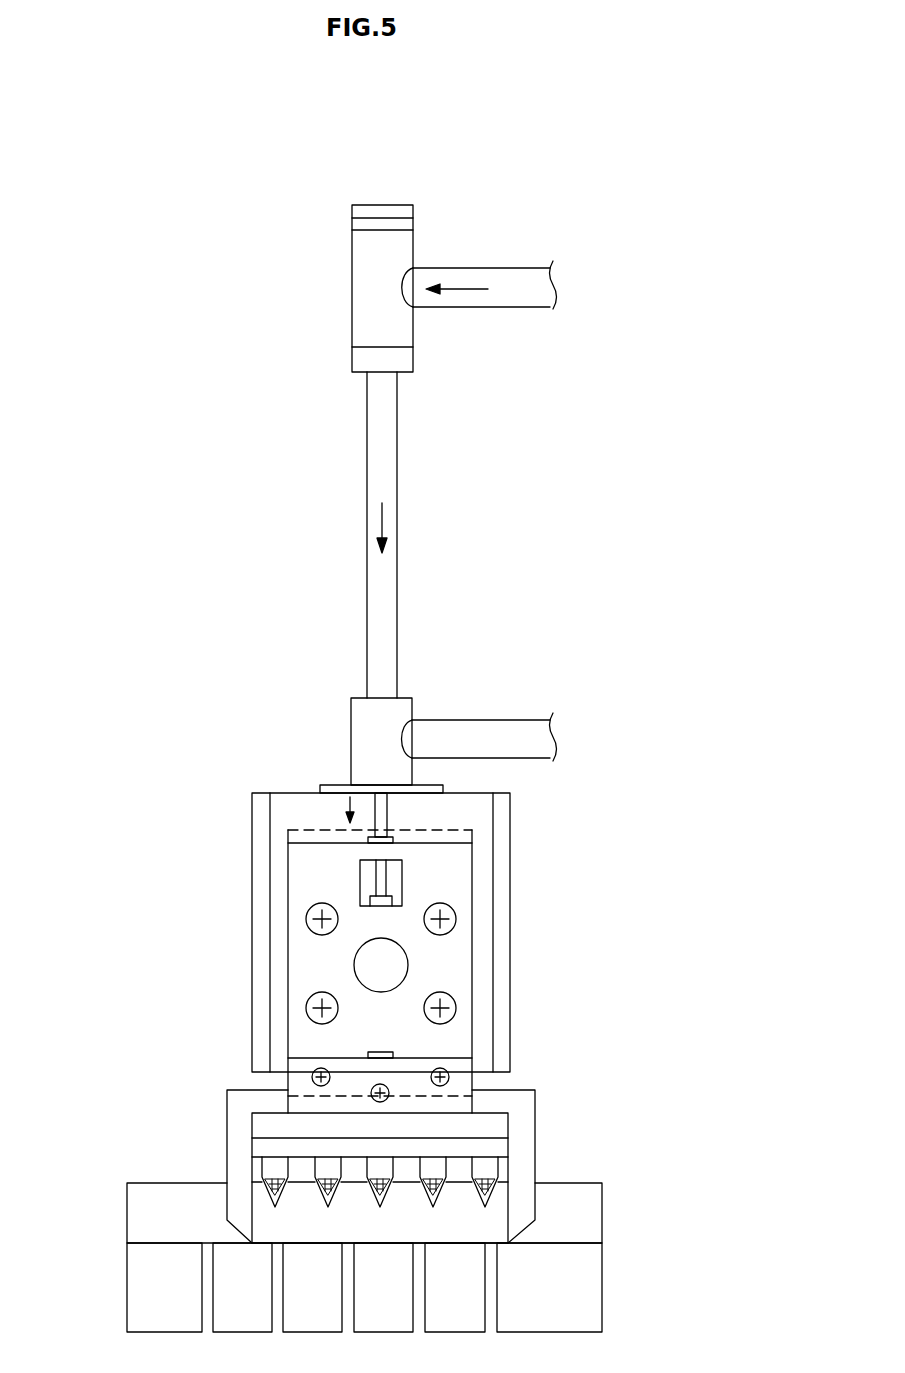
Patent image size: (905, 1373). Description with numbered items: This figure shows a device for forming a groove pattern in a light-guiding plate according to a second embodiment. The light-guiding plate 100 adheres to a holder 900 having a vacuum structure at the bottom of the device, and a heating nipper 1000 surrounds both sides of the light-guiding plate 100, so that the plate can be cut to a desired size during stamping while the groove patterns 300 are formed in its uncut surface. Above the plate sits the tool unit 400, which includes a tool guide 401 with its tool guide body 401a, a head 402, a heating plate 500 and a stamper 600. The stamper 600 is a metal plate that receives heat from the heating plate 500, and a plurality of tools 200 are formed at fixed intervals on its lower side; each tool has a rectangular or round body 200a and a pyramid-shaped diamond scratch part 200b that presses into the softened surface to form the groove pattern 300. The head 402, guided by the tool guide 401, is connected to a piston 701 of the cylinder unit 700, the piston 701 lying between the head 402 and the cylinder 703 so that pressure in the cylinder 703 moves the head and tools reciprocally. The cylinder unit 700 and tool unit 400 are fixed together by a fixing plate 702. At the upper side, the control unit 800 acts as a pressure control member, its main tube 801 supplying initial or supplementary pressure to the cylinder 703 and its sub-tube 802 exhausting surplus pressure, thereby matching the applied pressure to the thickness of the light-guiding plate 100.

The light-guiding plate 100 is at (132, 1212).
The tools 200 is at (495, 1165).
The body 200a is at (490, 1167).
The scratch part 200b is at (502, 1185).
The groove pattern 300 is at (262, 1184).
The tool unit 400 is at (404, 953).
The tool guide 401 is at (487, 883).
The tool guide body 401a is at (507, 933).
The head 402 is at (303, 961).
The heating plate 500 is at (502, 1127).
The stamper 600 is at (258, 1148).
The cylinder unit 700 is at (456, 604).
The piston 701 is at (384, 813).
The fixing plate 702 is at (331, 786).
The cylinder 703 is at (397, 480).
The control unit 800 is at (452, 240).
The main tube 801 is at (497, 309).
The sub-tube 802 is at (555, 745).
The holder 900 is at (596, 1290).
The heating nipper 1000 is at (240, 1092).